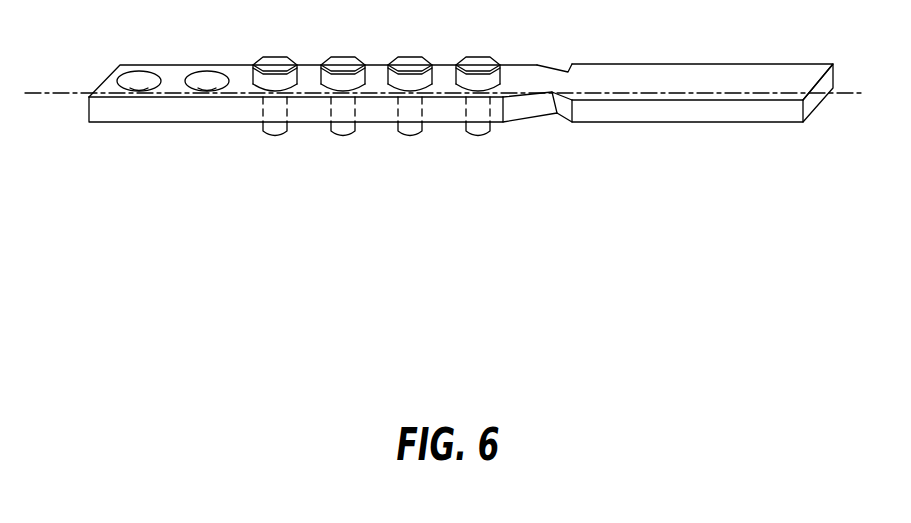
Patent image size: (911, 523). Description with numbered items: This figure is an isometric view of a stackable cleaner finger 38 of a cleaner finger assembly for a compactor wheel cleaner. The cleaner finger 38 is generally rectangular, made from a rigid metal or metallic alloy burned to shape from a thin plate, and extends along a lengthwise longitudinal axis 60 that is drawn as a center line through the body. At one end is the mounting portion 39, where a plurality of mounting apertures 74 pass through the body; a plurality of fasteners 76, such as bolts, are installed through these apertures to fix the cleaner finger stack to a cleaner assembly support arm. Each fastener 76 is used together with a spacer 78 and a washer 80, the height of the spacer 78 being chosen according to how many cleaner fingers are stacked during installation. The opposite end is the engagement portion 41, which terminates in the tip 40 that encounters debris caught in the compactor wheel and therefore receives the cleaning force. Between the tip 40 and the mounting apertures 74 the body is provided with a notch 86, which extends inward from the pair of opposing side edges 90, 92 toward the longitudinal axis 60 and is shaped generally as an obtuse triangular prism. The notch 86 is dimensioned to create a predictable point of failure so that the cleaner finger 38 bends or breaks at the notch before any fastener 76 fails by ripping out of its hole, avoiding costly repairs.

The stackable cleaner finger 38 is at (313, 100).
The mounting portion 39 is at (169, 107).
The tip 40 is at (812, 100).
The engagement portion 41 is at (719, 94).
The longitudinal axis 60 is at (849, 91).
The mounting apertures 74 is at (206, 80).
The fasteners 76 is at (376, 87).
The spacer 78 is at (297, 75).
The washer 80 is at (320, 78).
The notch 86 is at (553, 96).
The first side edge 90 is at (702, 63).
The second side edge 92 is at (658, 110).